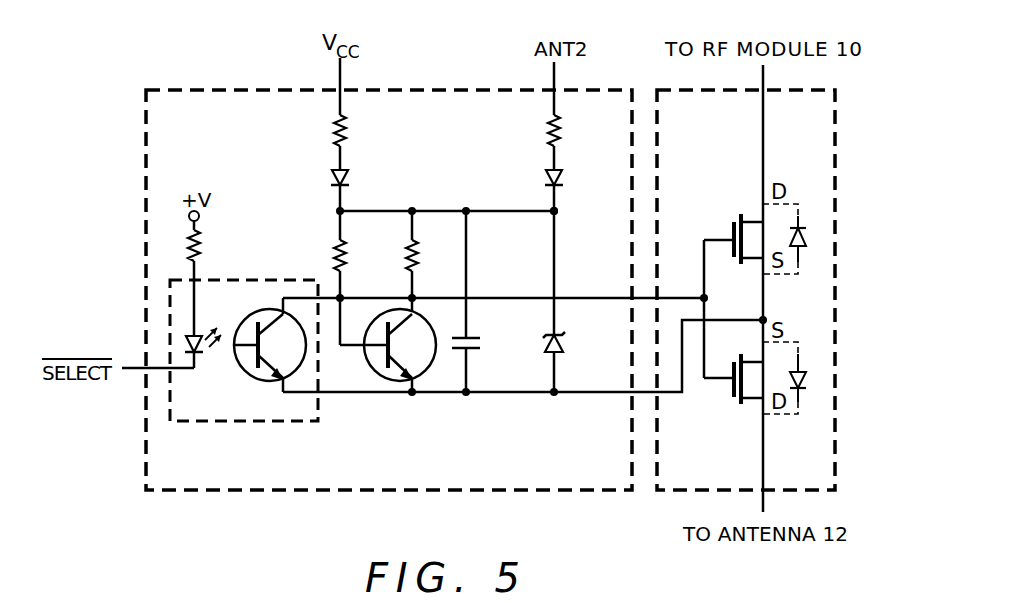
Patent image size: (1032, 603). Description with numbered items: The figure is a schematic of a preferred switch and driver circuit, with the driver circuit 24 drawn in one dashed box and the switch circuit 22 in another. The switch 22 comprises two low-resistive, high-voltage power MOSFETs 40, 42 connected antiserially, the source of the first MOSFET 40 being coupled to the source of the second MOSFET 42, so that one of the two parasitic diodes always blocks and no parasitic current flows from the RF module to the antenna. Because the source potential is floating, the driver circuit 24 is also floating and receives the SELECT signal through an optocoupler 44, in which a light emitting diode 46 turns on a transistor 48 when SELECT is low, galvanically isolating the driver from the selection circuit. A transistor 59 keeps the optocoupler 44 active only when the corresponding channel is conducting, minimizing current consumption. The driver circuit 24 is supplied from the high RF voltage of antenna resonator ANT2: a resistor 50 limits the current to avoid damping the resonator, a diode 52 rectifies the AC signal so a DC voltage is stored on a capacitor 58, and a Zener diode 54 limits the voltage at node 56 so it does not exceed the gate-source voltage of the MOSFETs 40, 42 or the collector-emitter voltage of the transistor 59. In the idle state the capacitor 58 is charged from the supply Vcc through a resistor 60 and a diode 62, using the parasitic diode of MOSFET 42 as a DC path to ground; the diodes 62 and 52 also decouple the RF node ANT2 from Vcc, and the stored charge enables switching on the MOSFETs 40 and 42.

The switch circuit 22 is at (835, 131).
The driver circuit 24 is at (146, 133).
The first MOSFET 40 is at (734, 212).
The second MOSFET 42 is at (738, 403).
The optocoupler 44 is at (240, 423).
The light emitting diode 46 is at (206, 335).
The transistor 48 is at (246, 381).
The resistor 50 is at (550, 133).
The diode 52 is at (546, 178).
The Zener diode 54 is at (565, 340).
The node 56 is at (560, 208).
The capacitor 58 is at (482, 345).
The transistor 59 is at (384, 308).
The resistor 60 is at (336, 133).
The diode 62 is at (332, 178).